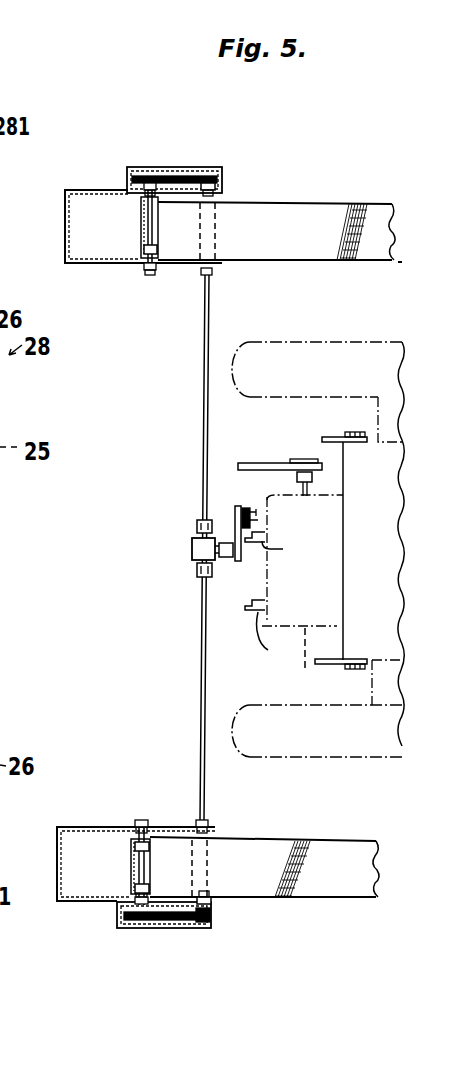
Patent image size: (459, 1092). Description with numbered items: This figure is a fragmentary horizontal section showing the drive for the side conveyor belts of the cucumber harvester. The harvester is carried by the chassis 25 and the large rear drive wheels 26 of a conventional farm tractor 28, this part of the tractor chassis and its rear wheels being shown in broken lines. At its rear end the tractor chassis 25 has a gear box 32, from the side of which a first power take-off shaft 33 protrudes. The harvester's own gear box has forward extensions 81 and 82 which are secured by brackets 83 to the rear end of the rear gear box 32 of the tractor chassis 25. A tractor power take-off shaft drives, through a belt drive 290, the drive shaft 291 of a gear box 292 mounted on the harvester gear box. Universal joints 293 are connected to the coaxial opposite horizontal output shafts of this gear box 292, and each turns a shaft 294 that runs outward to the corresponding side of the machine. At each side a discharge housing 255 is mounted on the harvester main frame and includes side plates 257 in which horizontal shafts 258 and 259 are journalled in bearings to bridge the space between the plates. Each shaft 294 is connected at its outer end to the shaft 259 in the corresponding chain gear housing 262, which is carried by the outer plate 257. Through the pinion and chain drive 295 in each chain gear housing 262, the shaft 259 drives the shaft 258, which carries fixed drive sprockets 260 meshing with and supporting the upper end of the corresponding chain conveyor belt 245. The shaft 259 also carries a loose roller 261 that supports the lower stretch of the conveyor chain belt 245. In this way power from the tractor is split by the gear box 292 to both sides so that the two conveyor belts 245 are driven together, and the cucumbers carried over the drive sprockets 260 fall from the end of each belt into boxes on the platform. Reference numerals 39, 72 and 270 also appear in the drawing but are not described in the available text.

The chassis 25 is at (402, 624).
The rear drive wheels 26 is at (338, 342).
The farm tractor 28 is at (392, 339).
The gear box 32 is at (303, 658).
The first power take-off shaft 33 is at (312, 497).
The mounting plate 39 is at (262, 510).
The frame member 72 is at (0, 681).
The forward extension 81 is at (272, 550).
The forward extension 82 is at (268, 603).
The brackets 83 is at (266, 535).
The chain conveyor belt 245 is at (330, 203).
The discharge housing 255 is at (57, 229).
The side plates 257 is at (128, 193).
The horizontal shaft 258 is at (153, 226).
The horizontal shaft 259 is at (210, 170).
The drive sprockets 260 is at (157, 258).
The loose roller 261 is at (215, 222).
The chain gear housing 262 is at (129, 167).
The knob 270 is at (252, 524).
The belt drive 290 is at (235, 512).
The drive shaft 291 is at (226, 557).
The gear box 292 is at (191, 552).
The universal joints 293 is at (197, 525).
The shaft 294 is at (210, 310).
The pinion and chain drive 295 is at (170, 178).